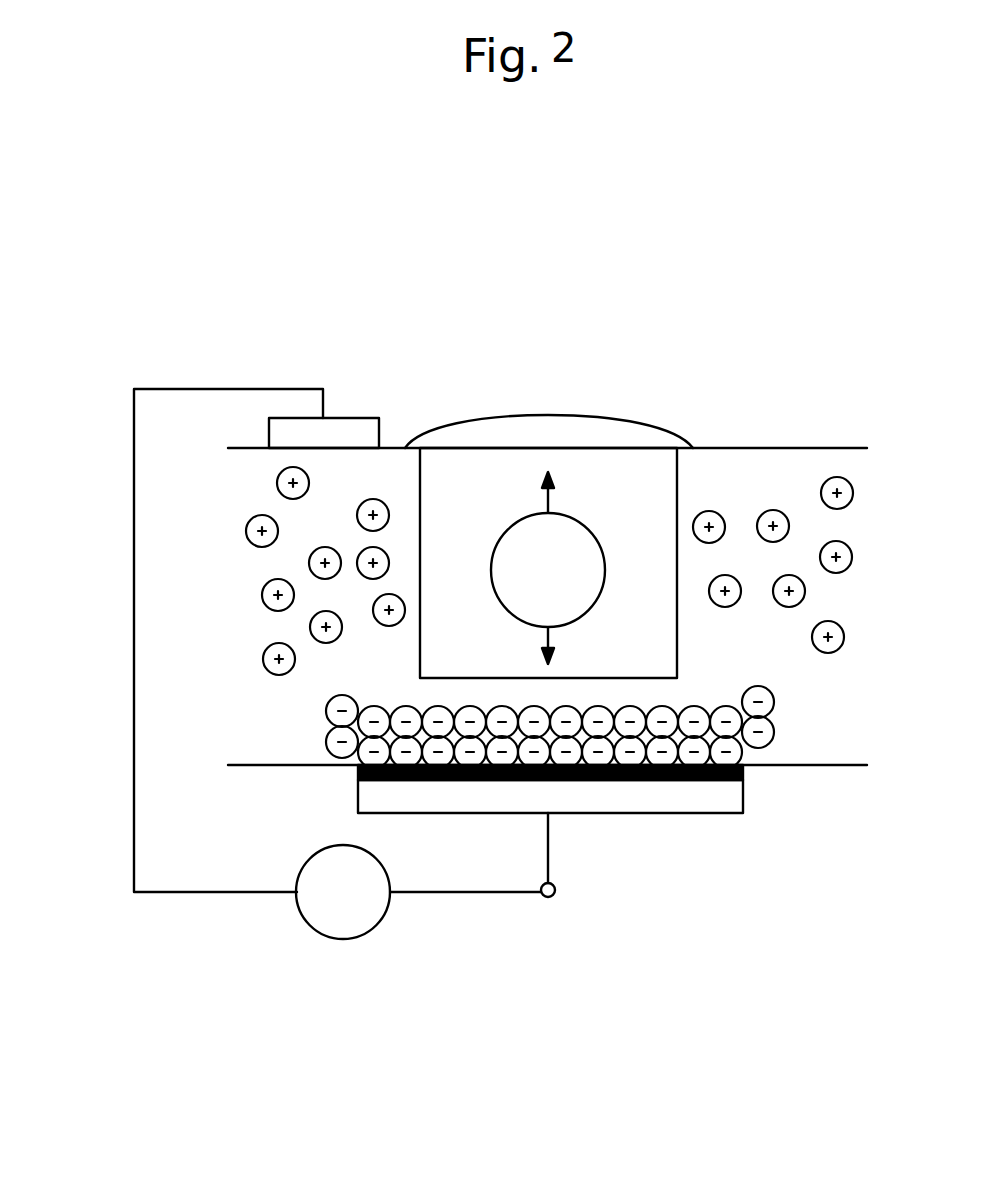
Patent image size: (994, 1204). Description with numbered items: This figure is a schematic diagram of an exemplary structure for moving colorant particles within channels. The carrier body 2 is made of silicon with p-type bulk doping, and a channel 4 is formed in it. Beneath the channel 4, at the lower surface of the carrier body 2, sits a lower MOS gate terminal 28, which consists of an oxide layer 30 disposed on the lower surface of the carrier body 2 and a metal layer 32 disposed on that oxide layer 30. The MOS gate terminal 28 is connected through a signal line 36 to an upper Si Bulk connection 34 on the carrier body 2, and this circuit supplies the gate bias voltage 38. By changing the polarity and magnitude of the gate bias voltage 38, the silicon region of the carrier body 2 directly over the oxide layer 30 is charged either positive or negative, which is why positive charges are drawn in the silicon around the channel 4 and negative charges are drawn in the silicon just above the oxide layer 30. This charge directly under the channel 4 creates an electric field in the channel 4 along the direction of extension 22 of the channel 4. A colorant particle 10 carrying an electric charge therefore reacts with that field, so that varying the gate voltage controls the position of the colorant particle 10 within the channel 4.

The carrier body 2 is at (766, 484).
The channel 4 is at (651, 470).
The colorant particle 10 is at (590, 608).
The direction of extension 22 is at (552, 492).
The lower MOS gate terminal 28 is at (494, 851).
The oxide layer 30 is at (312, 787).
The metal layer 32 is at (312, 819).
The upper Si Bulk connection 34 is at (354, 418).
The signal line 36 is at (134, 600).
The gate bias voltage 38 is at (341, 939).